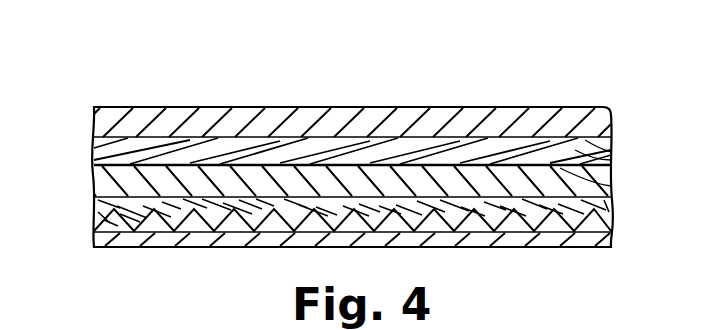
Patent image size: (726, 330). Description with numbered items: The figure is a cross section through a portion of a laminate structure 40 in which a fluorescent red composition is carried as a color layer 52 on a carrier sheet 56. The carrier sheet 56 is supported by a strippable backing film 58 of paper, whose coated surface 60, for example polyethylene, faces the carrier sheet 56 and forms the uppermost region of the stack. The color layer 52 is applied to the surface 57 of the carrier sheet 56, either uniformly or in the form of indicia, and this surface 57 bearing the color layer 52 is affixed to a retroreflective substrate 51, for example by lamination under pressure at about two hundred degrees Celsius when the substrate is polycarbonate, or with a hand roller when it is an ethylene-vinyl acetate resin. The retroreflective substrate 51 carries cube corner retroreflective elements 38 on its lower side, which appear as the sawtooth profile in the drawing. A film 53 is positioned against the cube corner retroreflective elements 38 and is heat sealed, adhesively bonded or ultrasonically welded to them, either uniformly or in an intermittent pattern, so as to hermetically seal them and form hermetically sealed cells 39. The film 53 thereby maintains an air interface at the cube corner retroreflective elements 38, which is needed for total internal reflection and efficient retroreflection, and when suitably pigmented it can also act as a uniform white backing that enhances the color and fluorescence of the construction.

The laminate structure 40 is at (622, 78).
The strippable backing film 58 is at (371, 118).
The carrier sheet 56 is at (96, 143).
The coated surface 60 is at (612, 155).
The color layer 52 is at (95, 173).
The surface 57 is at (612, 186).
The retroreflective substrate 51 is at (612, 212).
The cube corner retroreflective elements 38 is at (97, 223).
The hermetically sealed cells 39 is at (505, 222).
The film 53 is at (612, 238).